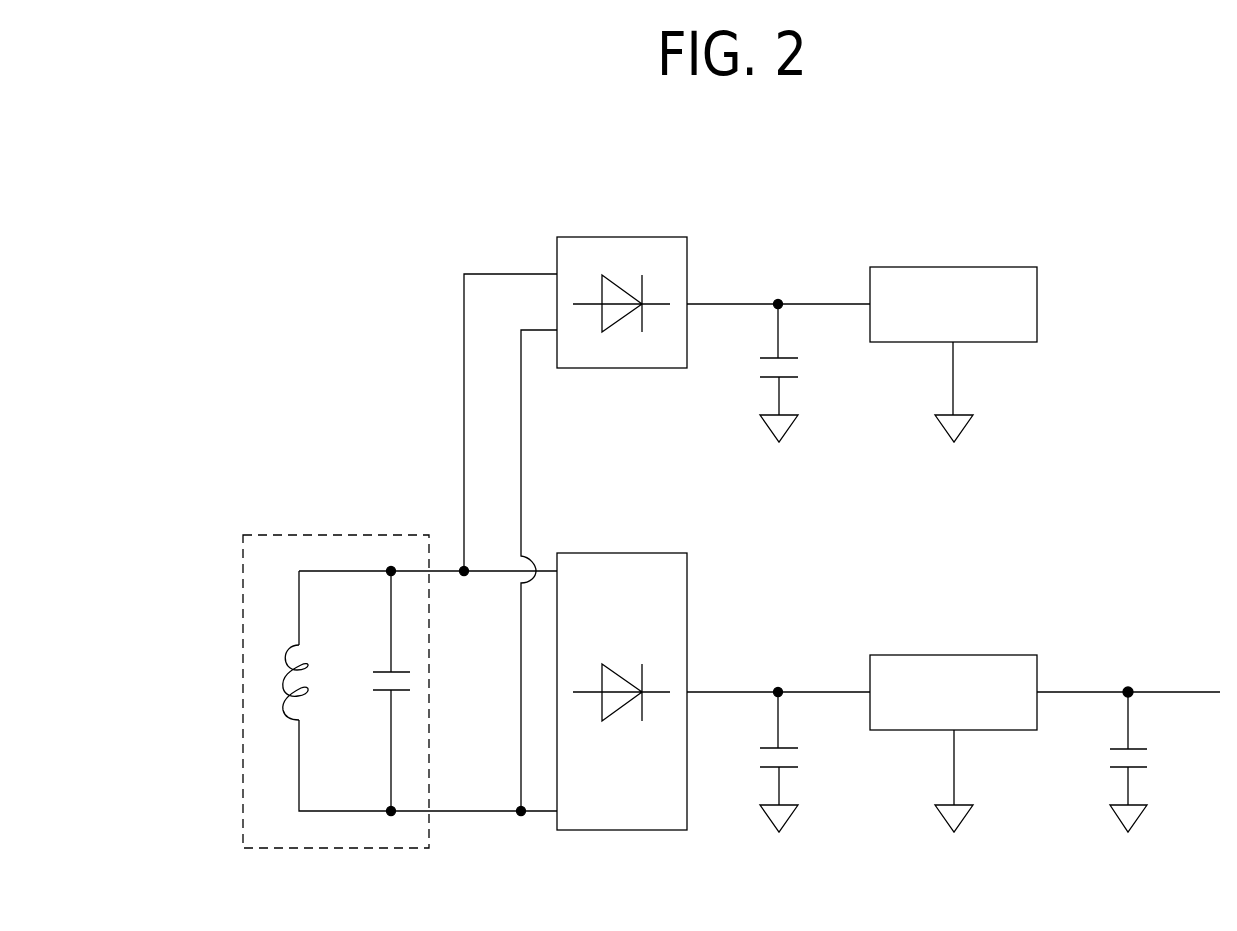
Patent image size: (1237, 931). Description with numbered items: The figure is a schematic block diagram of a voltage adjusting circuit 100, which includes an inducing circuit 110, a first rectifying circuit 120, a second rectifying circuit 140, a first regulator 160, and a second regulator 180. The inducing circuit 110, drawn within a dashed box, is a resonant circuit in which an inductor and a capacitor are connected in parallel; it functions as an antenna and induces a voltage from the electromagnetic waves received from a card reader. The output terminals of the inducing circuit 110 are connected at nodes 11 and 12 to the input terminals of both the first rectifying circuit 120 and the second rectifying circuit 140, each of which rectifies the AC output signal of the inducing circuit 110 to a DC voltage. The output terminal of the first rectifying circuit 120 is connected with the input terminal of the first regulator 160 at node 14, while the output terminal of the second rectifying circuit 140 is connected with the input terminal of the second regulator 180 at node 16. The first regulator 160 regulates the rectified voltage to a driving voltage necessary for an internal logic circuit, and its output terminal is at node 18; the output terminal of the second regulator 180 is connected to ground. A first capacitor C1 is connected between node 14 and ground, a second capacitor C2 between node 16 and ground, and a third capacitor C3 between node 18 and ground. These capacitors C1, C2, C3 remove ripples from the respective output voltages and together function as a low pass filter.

The voltage adjusting circuit 100 is at (1165, 175).
The inducing circuit 110 is at (340, 535).
The first rectifying circuit 120 is at (622, 552).
The second rectifying circuit 140 is at (622, 236).
The first regulator 160 is at (955, 655).
The second regulator 180 is at (955, 267).
The node 11 is at (464, 576).
The node 12 is at (518, 815).
The node 14 is at (783, 688).
The node 16 is at (783, 300).
The node 18 is at (1133, 689).
The first capacitor C1 is at (800, 762).
The second capacitor C2 is at (800, 373).
The third capacitor C3 is at (1150, 762).